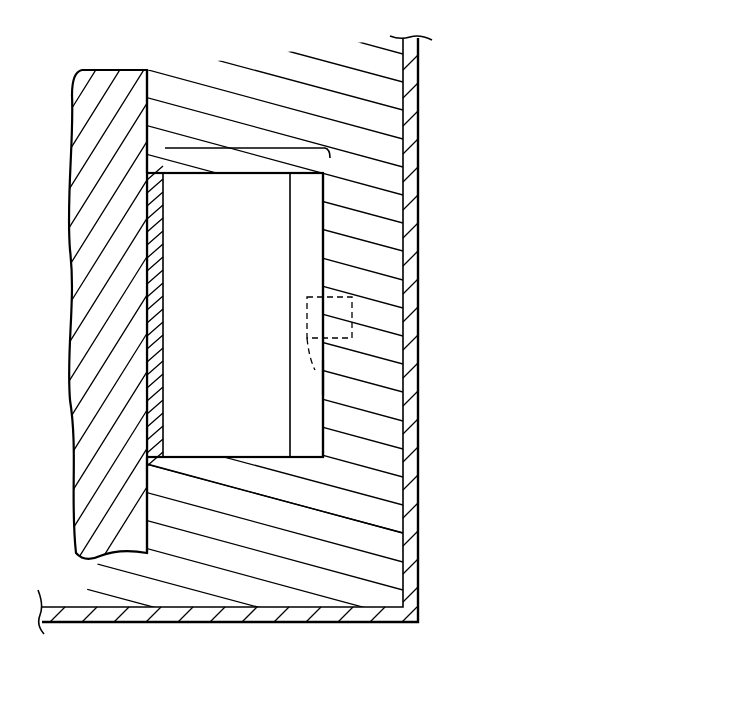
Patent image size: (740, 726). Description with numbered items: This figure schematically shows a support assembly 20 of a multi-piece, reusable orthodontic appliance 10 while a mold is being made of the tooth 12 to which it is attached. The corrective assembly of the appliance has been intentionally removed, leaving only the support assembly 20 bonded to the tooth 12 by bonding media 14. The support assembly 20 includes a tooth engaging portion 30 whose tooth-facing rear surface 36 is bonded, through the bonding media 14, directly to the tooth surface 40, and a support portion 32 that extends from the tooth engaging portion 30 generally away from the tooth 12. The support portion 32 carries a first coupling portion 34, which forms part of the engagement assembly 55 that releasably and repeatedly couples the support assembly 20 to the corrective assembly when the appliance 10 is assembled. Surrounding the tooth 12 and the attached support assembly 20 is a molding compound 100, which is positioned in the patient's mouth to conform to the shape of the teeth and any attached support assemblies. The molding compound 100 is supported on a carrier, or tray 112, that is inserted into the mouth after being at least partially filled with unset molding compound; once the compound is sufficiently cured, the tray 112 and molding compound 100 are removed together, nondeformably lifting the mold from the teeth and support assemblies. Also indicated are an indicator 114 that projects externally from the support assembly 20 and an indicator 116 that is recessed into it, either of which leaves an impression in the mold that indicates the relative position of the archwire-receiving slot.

The orthodontic appliance 10 is at (473, 110).
The tooth 12 is at (166, 88).
The bonding media 14 is at (147, 173).
The support assembly 20 is at (243, 147).
The tooth engaging portion 30 is at (147, 530).
The support portion 32 is at (238, 480).
The first coupling portion 34 is at (303, 368).
The tooth-facing rear surface 36 is at (163, 340).
The tooth surface 40 is at (176, 475).
The engagement assembly 55 is at (315, 510).
The molding compound 100 is at (385, 206).
The tray 112 is at (410, 275).
The externally projecting indicator 114 is at (352, 338).
The internally projecting indicator 116 is at (330, 377).